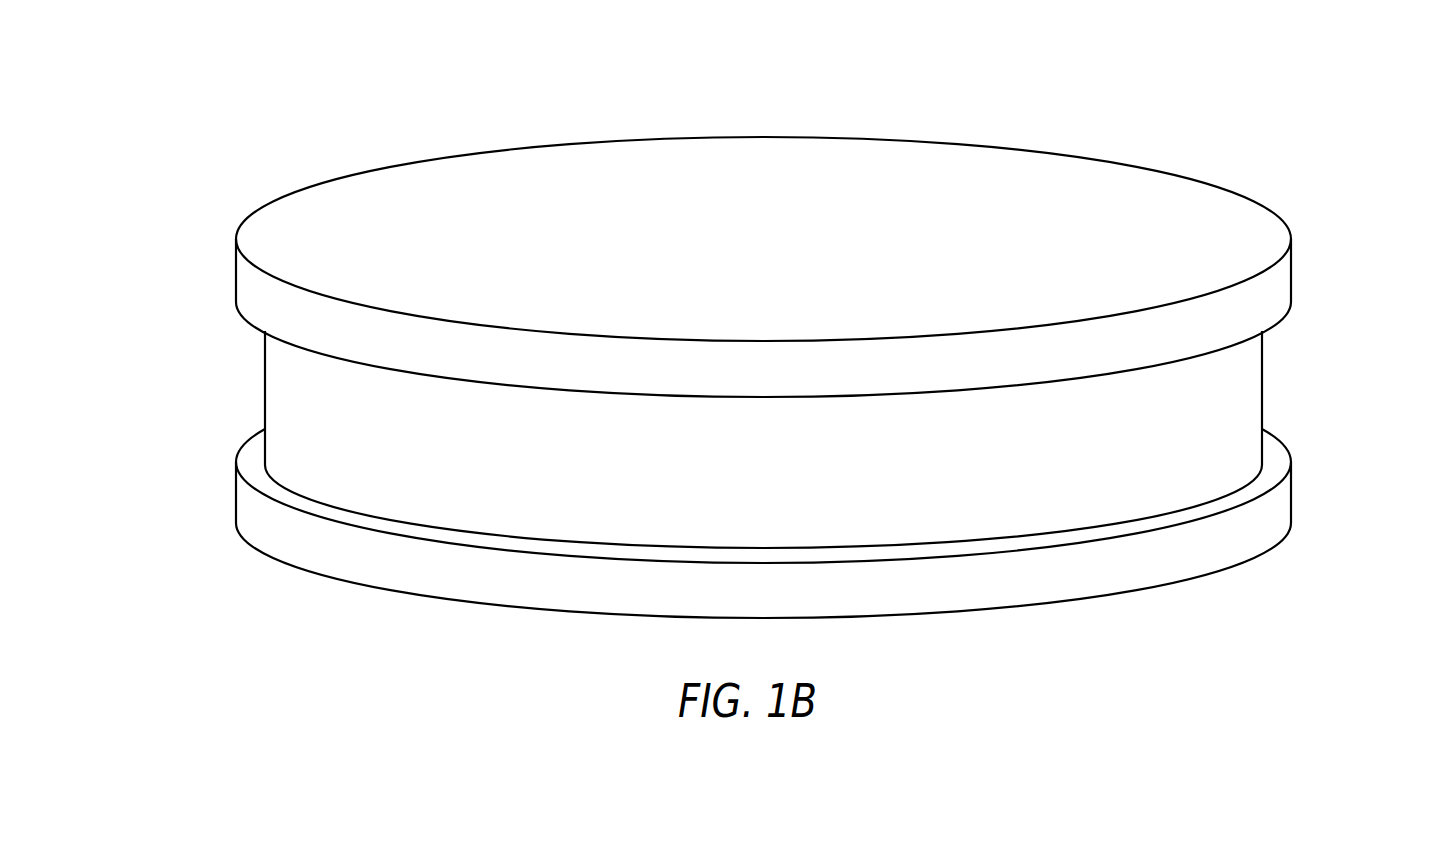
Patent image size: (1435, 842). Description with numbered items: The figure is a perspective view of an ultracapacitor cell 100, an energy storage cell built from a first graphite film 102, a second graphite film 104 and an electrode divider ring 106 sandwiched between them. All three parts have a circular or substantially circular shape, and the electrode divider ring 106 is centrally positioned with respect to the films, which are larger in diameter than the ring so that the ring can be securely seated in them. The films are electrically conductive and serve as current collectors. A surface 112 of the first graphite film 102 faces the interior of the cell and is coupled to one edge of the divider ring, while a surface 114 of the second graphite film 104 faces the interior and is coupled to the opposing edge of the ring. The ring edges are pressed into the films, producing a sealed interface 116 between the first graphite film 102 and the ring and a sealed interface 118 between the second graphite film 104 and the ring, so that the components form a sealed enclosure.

The ultracapacitor cell 100 is at (332, 95).
The first graphite film 102 is at (255, 282).
The second graphite film 104 is at (255, 503).
The electrode divider ring 106 is at (1233, 397).
The surface of the first graphite film 112 is at (1284, 322).
The surface of the second graphite film 114 is at (1277, 463).
The sealed interface 116 is at (244, 338).
The sealed interface 118 is at (256, 453).